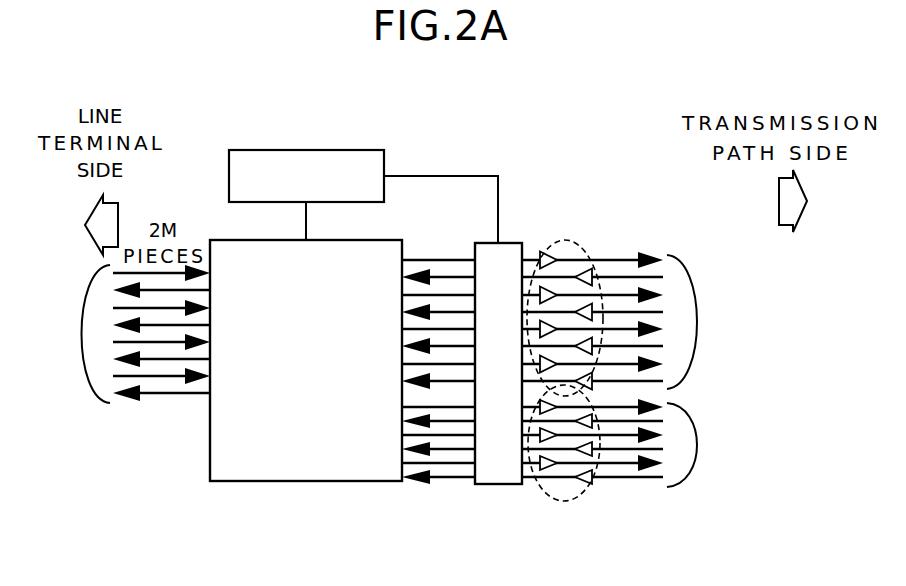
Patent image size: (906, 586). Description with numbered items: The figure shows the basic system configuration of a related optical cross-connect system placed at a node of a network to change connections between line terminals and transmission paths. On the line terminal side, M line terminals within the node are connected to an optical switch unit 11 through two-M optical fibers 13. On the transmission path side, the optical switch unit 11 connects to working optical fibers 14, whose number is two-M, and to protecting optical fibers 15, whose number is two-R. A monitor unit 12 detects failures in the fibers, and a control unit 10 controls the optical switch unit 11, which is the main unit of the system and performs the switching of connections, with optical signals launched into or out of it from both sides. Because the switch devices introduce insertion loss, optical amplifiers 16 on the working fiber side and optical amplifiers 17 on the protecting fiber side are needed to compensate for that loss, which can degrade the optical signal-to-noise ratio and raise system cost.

The control unit 10 is at (310, 150).
The optical switch unit 11 is at (220, 240).
The monitor unit 12 is at (512, 243).
The optical fibers 13 is at (97, 404).
The working optical fibers 14 is at (694, 290).
The protecting optical fibers 15 is at (694, 425).
The optical amplifiers 16 is at (572, 240).
The optical amplifiers 17 is at (563, 502).